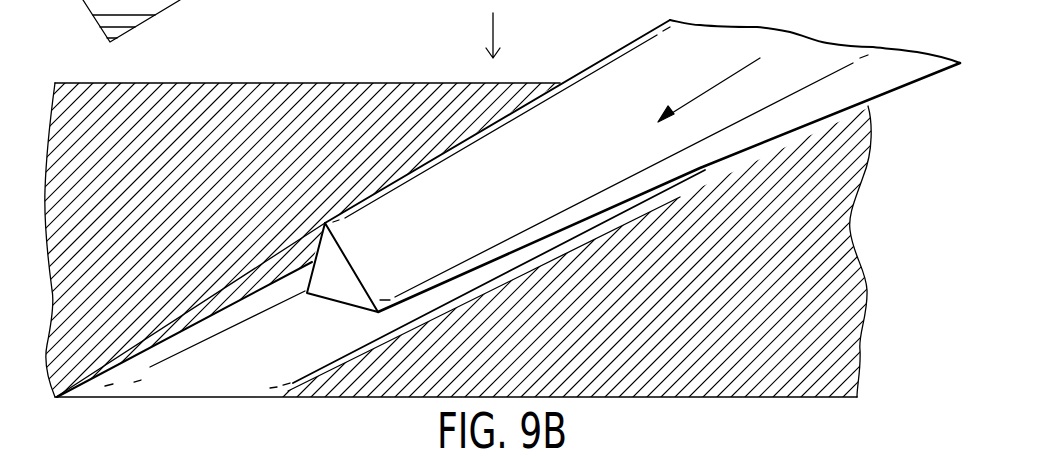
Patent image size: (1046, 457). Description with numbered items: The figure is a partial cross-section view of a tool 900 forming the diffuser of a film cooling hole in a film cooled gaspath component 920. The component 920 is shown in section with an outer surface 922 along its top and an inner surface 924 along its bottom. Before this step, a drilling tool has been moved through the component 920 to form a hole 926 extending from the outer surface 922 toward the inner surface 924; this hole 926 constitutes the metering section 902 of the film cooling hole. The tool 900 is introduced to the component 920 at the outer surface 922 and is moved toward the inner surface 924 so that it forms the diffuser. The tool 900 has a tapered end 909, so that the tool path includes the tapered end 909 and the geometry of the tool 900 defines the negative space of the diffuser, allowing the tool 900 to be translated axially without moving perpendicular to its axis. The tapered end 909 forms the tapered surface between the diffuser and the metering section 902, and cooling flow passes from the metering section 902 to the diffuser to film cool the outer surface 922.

The tool 900 is at (624, 183).
The metering section 902 is at (245, 357).
The tapered end 909 is at (331, 284).
The film cooled gaspath component 920 is at (523, 237).
The outer surface 922 is at (423, 82).
The inner surface 924 is at (342, 397).
The hole 926 is at (150, 357).